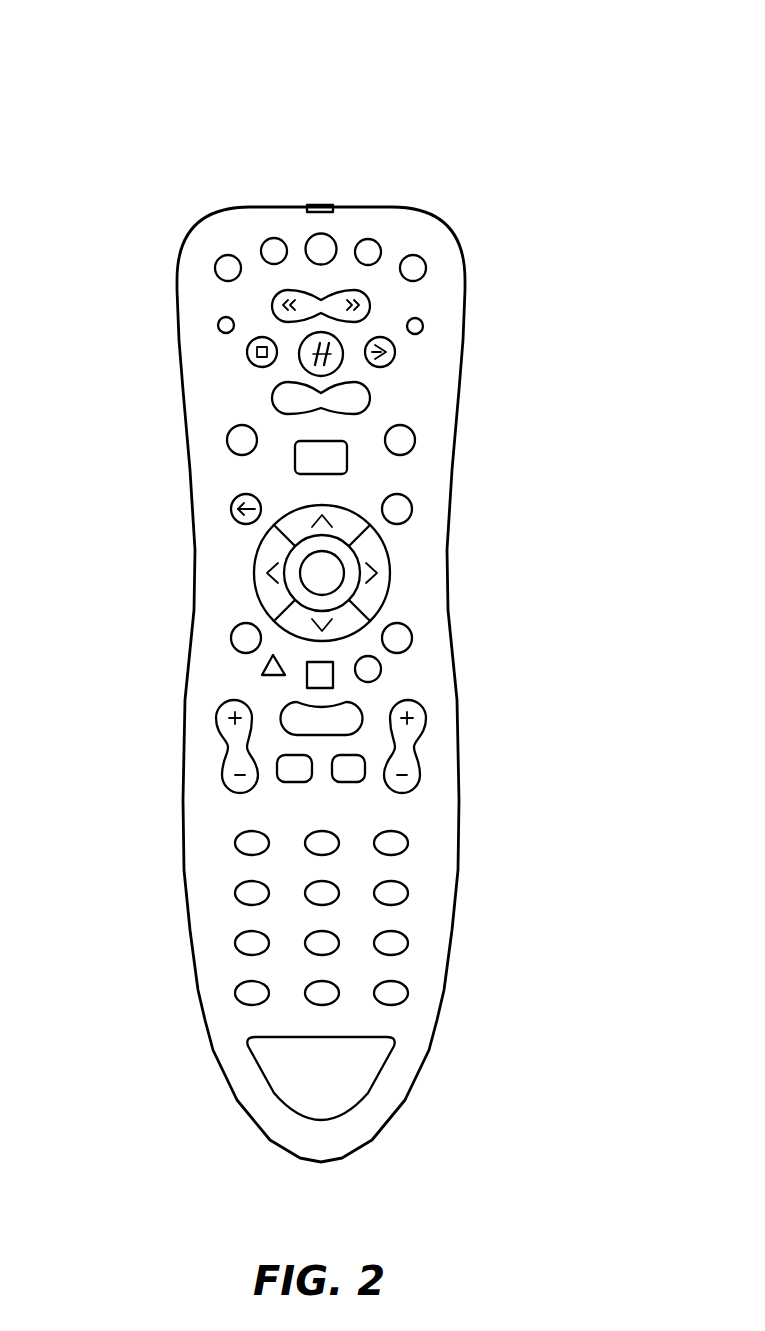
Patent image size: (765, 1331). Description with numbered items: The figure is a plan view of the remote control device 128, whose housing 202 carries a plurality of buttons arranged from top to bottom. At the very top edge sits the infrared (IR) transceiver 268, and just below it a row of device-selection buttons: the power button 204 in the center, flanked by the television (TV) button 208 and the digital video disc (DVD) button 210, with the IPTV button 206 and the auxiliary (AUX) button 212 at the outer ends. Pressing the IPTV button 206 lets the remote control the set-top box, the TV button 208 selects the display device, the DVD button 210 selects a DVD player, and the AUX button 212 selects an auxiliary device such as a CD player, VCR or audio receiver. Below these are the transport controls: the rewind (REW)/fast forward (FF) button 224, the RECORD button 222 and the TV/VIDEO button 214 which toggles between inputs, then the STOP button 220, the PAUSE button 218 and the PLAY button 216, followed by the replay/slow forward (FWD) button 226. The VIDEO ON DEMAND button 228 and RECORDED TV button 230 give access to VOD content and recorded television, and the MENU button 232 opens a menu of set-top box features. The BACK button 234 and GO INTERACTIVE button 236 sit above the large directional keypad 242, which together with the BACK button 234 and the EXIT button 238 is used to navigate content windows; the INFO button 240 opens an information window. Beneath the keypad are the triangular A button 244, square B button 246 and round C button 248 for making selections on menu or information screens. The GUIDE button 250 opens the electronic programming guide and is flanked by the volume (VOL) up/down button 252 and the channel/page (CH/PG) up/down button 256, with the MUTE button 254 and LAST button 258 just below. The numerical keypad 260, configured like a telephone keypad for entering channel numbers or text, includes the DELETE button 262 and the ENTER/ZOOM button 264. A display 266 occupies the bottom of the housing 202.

The remote control device 128 is at (613, 129).
The housing 202 is at (390, 684).
The power button 204 is at (243, 196).
The IPTV button 206 is at (149, 242).
The television (TV) button 208 is at (185, 210).
The digital video disc (DVD) button 210 is at (460, 211).
The auxiliary (AUX) button 212 is at (496, 242).
The TV/VIDEO button 214 is at (504, 310).
The PLAY button 216 is at (471, 347).
The PAUSE button 218 is at (451, 377).
The STOP button 220 is at (167, 352).
The RECORD button 222 is at (148, 312).
The rewind (REW)/fast forward (FF) button 224 is at (213, 283).
The replay/slow forward (FWD) button 226 is at (227, 405).
The VIDEO ON DEMAND button 228 is at (166, 447).
The RECORDED TV button 230 is at (480, 447).
The MENU button 232 is at (211, 474).
The BACK button 234 is at (173, 519).
The GO INTERACTIVE button 236 is at (473, 519).
The EXIT button 238 is at (168, 643).
The INFO button 240 is at (478, 645).
The directional keypad 242 is at (241, 573).
The triangular A button 244 is at (189, 675).
The square B button 246 is at (195, 697).
The round C button 248 is at (460, 684).
The GUIDE button 250 is at (223, 750).
The volume (VOL) up/down button 252 is at (166, 746).
The MUTE button 254 is at (193, 809).
The channel/page (CH/PG) up/down button 256 is at (479, 746).
The LAST button 258 is at (439, 791).
The numerical keypad 260 is at (405, 825).
The DELETE button 262 is at (176, 1006).
The ENTER/ZOOM button 264 is at (448, 1043).
The display 266 is at (256, 1087).
The infrared (IR) transceiver 268 is at (371, 176).